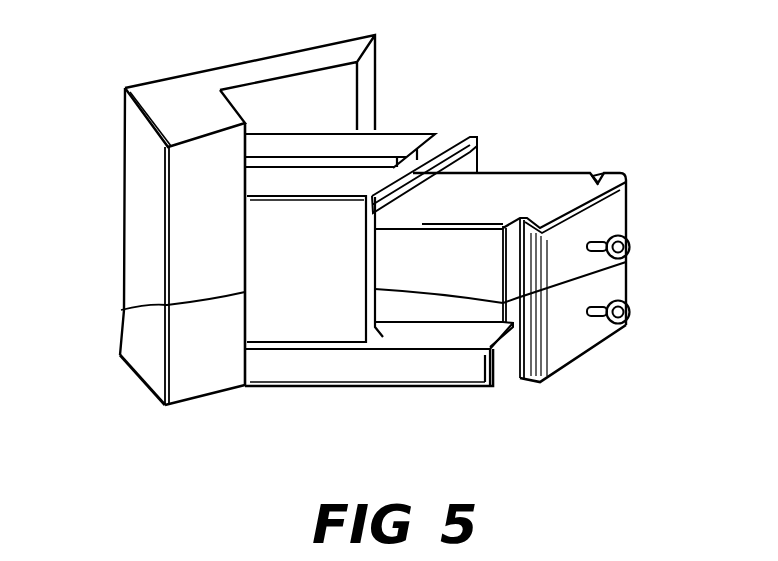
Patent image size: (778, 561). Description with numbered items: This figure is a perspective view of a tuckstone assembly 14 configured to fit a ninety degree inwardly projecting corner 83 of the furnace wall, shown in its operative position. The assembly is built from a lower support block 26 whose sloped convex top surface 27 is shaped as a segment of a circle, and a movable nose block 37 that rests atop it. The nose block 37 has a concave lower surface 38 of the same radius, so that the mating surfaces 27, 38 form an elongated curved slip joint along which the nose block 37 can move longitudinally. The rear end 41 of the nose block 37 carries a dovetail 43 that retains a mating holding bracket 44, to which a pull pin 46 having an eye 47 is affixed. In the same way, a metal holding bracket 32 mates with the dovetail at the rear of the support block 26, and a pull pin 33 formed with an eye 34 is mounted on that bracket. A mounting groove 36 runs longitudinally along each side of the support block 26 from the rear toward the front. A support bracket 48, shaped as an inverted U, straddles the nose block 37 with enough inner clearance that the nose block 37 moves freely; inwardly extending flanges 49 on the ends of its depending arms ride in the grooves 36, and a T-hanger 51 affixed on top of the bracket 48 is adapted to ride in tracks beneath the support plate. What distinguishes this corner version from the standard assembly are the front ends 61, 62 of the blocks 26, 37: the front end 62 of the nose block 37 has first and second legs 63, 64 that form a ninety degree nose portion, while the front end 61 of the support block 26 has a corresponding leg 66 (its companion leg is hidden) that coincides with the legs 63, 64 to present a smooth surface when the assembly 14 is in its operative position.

The tuckstone assembly 14 is at (287, 430).
The support block 26 is at (312, 388).
The top surface 27 is at (470, 297).
The holding bracket 32 is at (573, 352).
The pull pin 33 is at (634, 308).
The eye 34 is at (630, 324).
The mounting groove 36 is at (513, 327).
The nose block 37 is at (493, 172).
The lower surface 38 is at (407, 298).
The rear end 41 is at (557, 178).
The dovetail 43 is at (598, 188).
The holding bracket 44 is at (613, 210).
The pull pin 46 is at (631, 238).
The eye 47 is at (621, 252).
The support bracket 48 is at (449, 132).
The flange 49 is at (379, 330).
The T-hanger 51 is at (400, 137).
The front end 61 is at (183, 383).
The front end 62 is at (128, 215).
The first leg 63 is at (162, 107).
The second leg 64 is at (264, 54).
The leg 66 is at (150, 364).
The inwardly projecting corner 83 is at (159, 80).